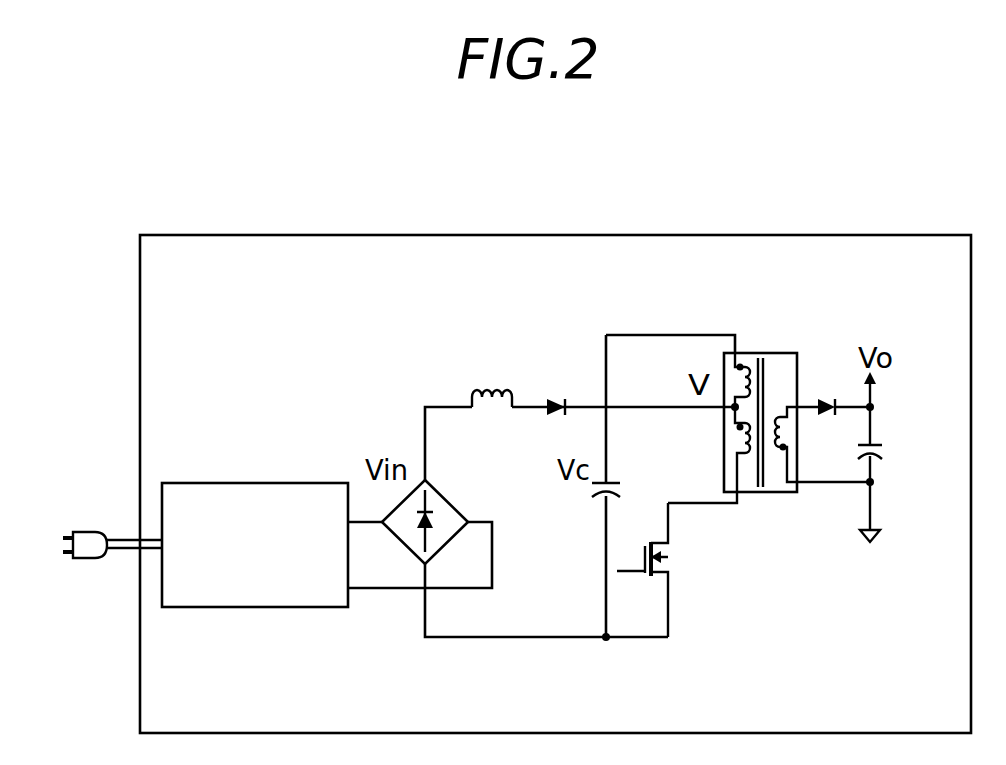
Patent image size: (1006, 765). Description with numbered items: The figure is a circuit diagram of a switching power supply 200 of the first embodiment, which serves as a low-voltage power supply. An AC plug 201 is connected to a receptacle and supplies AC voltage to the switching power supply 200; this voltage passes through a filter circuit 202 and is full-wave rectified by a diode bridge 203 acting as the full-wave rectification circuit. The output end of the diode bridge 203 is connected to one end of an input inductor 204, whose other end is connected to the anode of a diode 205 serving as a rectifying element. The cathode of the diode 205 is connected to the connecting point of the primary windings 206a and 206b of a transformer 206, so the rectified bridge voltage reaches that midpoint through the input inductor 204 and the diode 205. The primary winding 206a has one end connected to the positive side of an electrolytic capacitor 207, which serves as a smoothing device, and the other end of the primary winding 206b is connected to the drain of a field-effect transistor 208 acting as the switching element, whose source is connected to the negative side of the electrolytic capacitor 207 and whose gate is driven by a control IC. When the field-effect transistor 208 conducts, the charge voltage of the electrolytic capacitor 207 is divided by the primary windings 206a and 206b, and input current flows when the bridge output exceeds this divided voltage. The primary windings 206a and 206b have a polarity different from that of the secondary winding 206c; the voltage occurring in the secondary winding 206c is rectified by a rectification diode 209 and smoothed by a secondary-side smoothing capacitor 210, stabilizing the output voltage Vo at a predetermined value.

The switching power supply 200 is at (508, 235).
The AC plug 201 is at (98, 563).
The filter circuit 202 is at (265, 615).
The diode bridge 203 is at (460, 493).
The input inductor 204 is at (492, 382).
The diode 205 is at (552, 395).
The transformer 206 is at (769, 430).
The primary winding 206a is at (740, 360).
The primary winding 206b is at (750, 457).
The secondary winding 206c is at (777, 413).
The electrolytic capacitor 207 is at (622, 475).
The field-effect transistor 208 is at (675, 567).
The rectification diode 209 is at (823, 395).
The secondary-side smoothing capacitor 210 is at (888, 448).